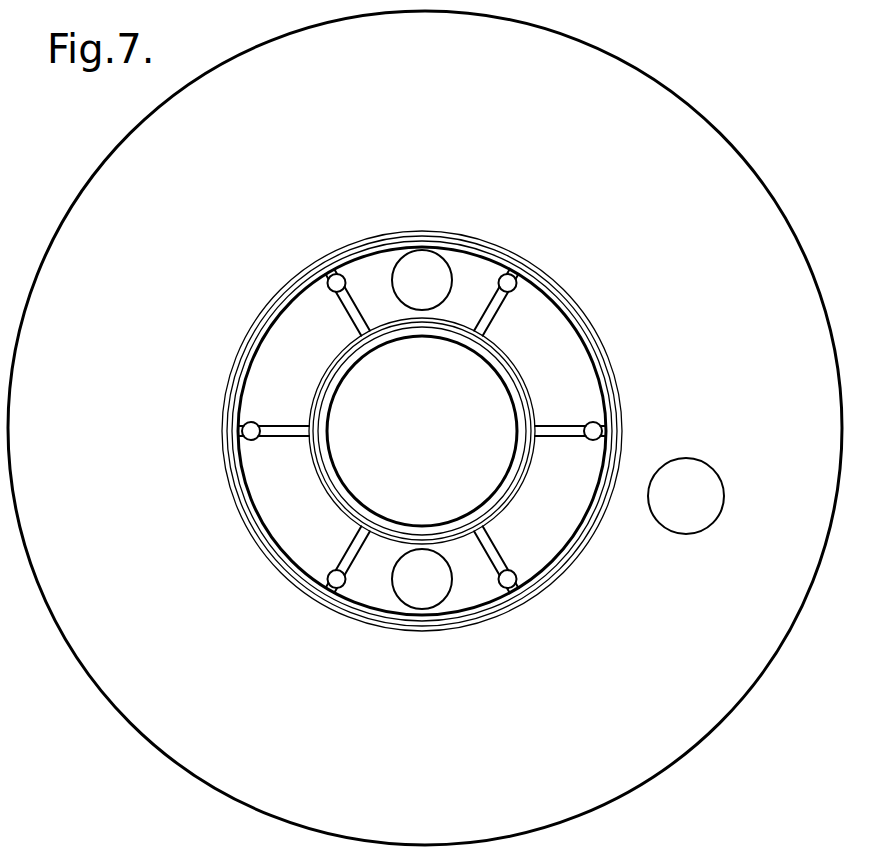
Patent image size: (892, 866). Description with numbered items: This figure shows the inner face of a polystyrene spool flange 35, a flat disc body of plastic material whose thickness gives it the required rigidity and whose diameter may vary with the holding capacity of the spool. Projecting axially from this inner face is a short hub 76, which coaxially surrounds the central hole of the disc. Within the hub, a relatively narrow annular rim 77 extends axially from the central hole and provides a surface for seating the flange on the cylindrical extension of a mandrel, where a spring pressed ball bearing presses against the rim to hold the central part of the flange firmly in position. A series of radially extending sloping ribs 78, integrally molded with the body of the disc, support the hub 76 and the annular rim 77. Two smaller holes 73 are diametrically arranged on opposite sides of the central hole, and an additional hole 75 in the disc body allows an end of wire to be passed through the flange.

The flange 35 is at (670, 767).
The smaller holes 73 is at (426, 256).
The additional hole 75 is at (712, 480).
The hub 76 is at (290, 276).
The annular rim 77 is at (422, 336).
The sloping ribs 78 is at (348, 315).